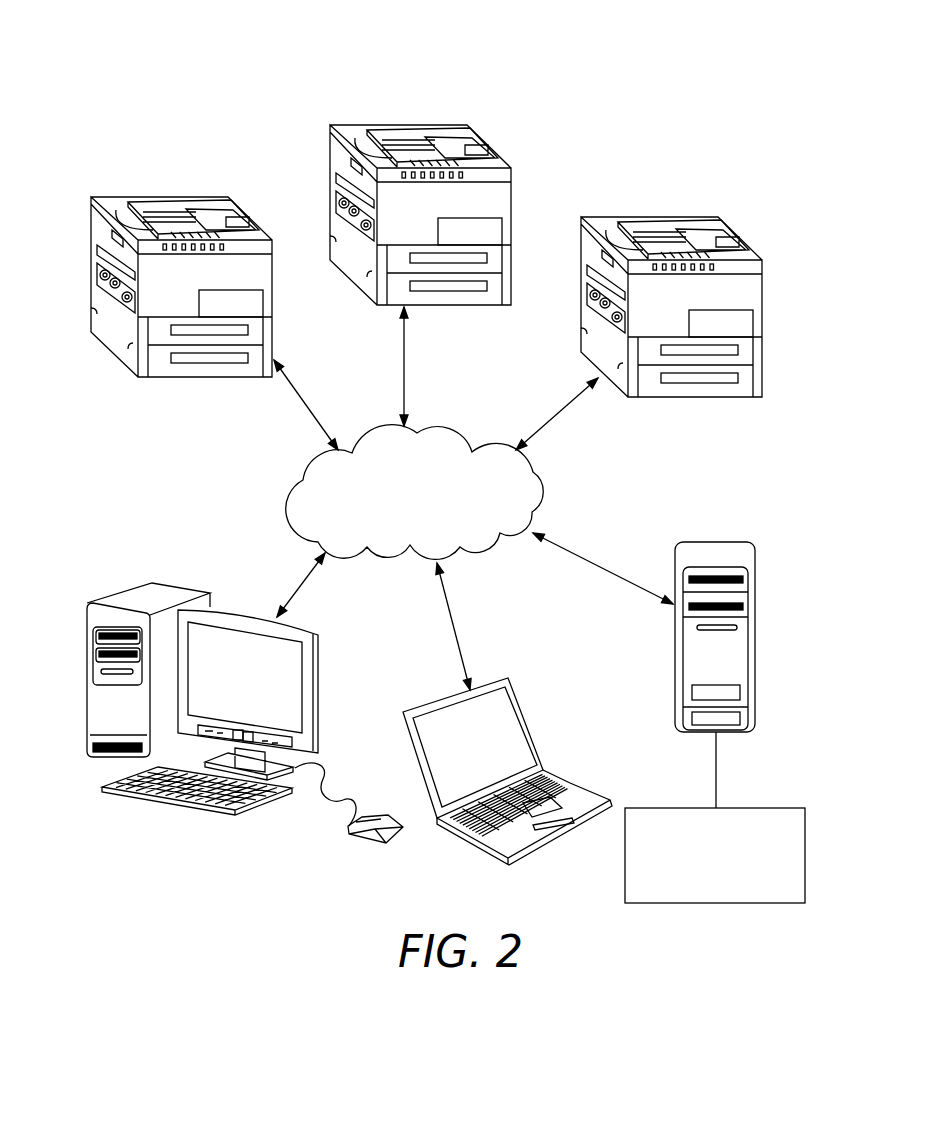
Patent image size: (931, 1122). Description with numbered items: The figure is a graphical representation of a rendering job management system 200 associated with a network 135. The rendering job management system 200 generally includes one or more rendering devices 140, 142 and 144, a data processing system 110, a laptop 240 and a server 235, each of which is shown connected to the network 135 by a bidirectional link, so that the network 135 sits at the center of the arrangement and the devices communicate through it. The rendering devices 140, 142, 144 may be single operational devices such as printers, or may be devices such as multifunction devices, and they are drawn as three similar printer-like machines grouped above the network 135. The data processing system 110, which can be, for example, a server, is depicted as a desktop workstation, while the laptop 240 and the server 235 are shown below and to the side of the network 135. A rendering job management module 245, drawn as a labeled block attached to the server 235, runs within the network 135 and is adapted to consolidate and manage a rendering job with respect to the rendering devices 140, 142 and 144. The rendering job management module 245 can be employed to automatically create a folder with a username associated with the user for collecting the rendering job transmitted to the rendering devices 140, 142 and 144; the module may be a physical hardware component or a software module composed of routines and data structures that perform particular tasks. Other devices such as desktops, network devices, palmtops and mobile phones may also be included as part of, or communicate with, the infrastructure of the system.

The rendering job management system 200 is at (597, 80).
The rendering device 140 is at (416, 126).
The rendering device 142 is at (180, 201).
The rendering device 144 is at (669, 219).
The network 135 is at (440, 433).
The data processing system 110 is at (323, 697).
The laptop 240 is at (527, 722).
The server 235 is at (707, 541).
The rendering job management module 245 is at (742, 808).